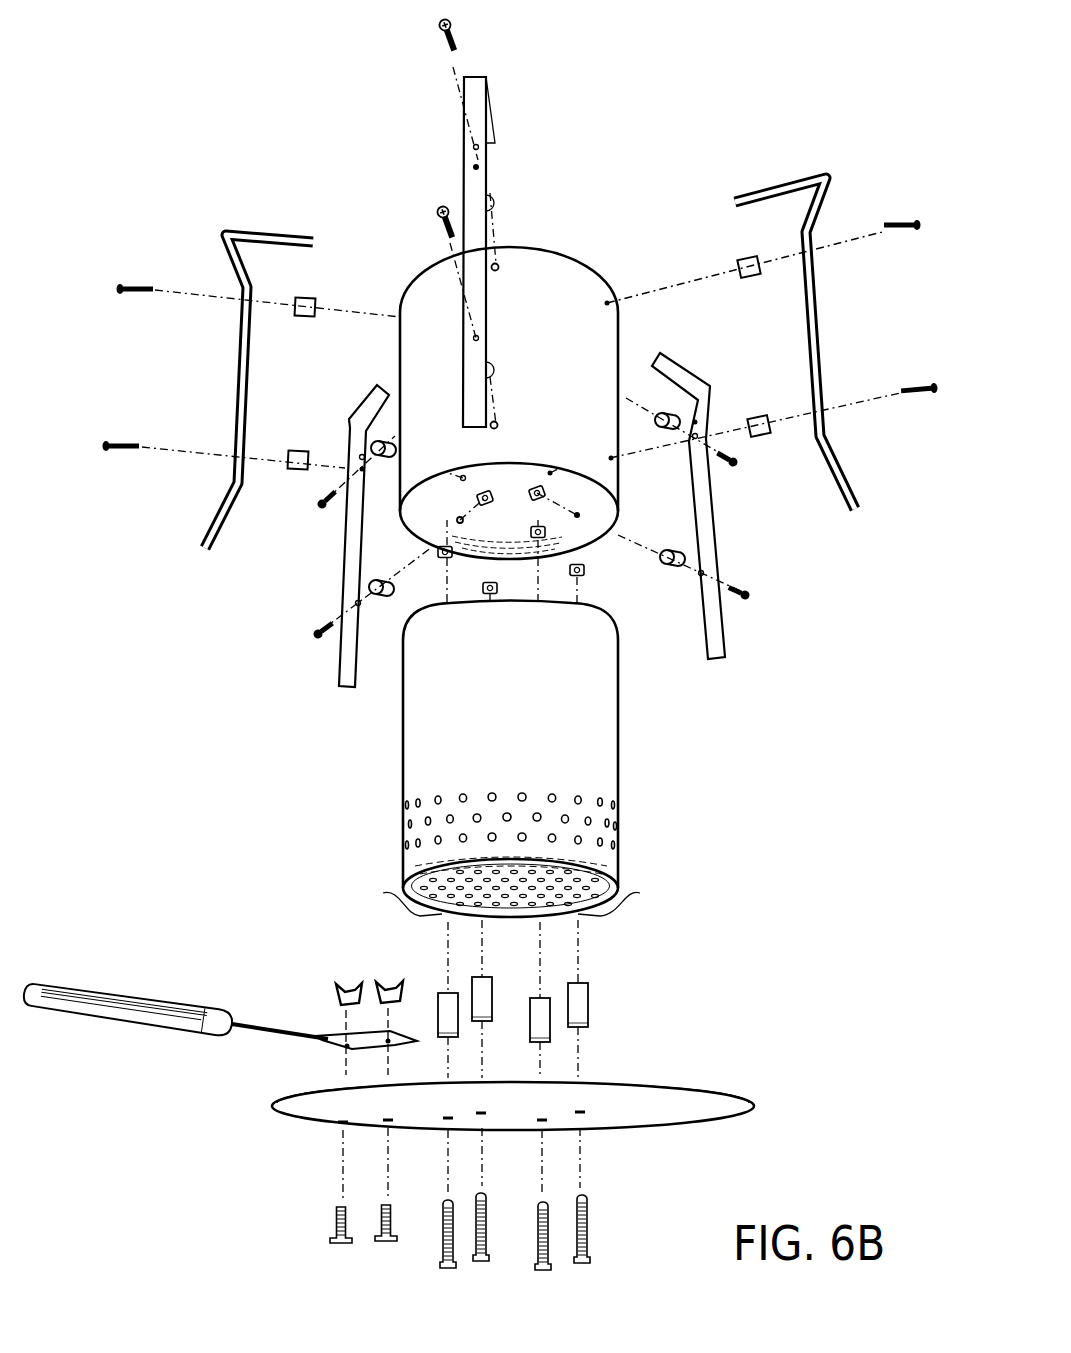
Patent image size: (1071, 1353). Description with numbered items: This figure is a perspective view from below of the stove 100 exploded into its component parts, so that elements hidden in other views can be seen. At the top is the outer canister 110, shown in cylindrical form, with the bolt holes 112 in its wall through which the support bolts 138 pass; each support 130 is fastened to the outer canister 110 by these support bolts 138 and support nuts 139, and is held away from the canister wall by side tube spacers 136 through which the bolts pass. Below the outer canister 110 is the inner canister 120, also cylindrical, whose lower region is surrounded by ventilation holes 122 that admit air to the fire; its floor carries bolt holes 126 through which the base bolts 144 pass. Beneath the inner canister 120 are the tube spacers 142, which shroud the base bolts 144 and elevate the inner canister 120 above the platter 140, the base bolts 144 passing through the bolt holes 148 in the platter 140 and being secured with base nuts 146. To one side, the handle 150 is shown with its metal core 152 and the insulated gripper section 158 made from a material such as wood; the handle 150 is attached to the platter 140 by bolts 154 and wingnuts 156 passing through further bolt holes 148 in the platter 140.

The stove 100 is at (196, 112).
The outer canister 110 is at (546, 230).
The bolt holes in outer canister 112 is at (609, 456).
The inner canister 120 is at (581, 759).
The ventilation holes 122 is at (626, 860).
The bolt holes in base of inner canister 126 is at (622, 906).
The support 130 is at (502, 91).
The side tube spacers 136 is at (758, 414).
The support bolts 138 is at (440, 207).
The support nuts 139 is at (540, 492).
The platter 140 is at (511, 1073).
The tube spacers 142 is at (552, 1000).
The base bolts 144 is at (587, 1208).
The base nuts 146 is at (546, 535).
The bolt holes in platter 148 is at (580, 1113).
The handle 150 is at (219, 1006).
The metal core of handle 152 is at (265, 1035).
The bolts for attaching handle to platter 154 is at (383, 1246).
The wingnuts 156 is at (380, 980).
The insulated gripper section of handle 158 is at (155, 1025).